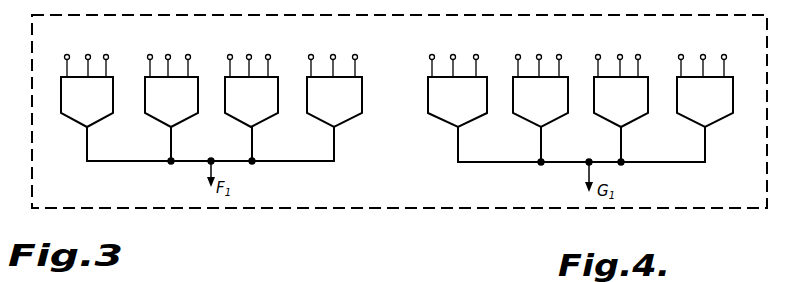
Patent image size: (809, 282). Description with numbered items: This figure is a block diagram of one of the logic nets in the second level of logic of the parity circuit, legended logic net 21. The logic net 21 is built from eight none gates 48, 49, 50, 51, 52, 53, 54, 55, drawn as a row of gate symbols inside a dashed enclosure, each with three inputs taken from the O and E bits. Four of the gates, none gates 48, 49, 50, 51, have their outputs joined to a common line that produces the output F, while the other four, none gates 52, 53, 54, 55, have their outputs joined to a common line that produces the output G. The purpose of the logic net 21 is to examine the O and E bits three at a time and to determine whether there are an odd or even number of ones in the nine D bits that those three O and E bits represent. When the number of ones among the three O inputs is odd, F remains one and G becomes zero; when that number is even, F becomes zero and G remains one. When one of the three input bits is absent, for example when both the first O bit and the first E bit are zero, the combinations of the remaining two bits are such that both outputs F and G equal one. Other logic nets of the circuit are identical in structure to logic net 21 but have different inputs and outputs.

The logic net 21 is at (562, 210).
The none gate 48 is at (79, 122).
The none gate 49 is at (157, 121).
The none gate 50 is at (239, 121).
The none gate 51 is at (320, 120).
The none gate 52 is at (448, 122).
The none gate 53 is at (528, 120).
The none gate 54 is at (610, 121).
The none gate 55 is at (697, 121).